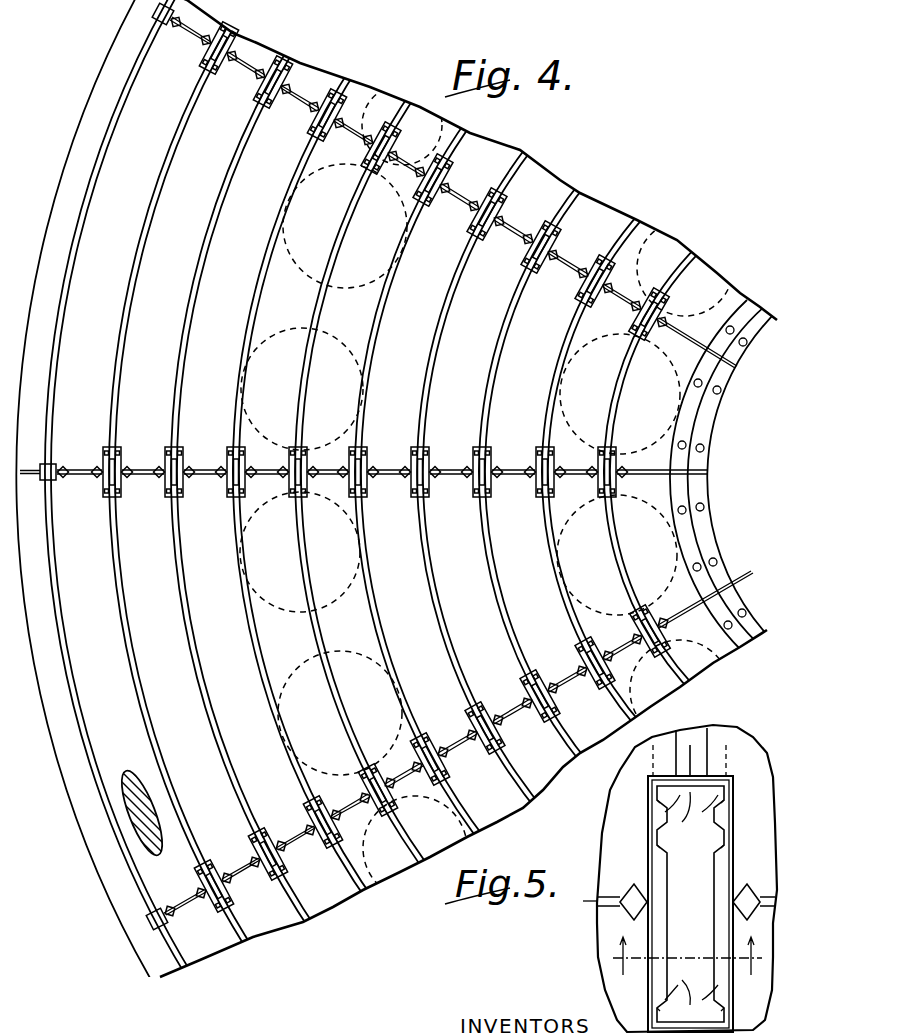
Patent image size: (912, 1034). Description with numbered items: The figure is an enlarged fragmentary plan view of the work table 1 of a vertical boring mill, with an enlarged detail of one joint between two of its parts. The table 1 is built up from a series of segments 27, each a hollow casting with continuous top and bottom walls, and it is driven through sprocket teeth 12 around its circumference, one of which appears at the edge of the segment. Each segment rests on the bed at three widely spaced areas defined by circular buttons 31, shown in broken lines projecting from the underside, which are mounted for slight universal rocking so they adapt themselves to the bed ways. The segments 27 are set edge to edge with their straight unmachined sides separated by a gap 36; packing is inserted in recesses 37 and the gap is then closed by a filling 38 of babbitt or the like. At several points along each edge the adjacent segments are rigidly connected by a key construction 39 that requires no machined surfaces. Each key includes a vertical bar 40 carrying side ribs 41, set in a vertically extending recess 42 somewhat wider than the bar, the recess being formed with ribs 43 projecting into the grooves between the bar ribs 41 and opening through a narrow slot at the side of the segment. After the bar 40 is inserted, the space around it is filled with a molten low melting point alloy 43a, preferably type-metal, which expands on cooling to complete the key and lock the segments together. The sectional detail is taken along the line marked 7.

In FIG. 4, the table 1 is at (552, 188).
In FIG. 5, the table 1 is at (752, 748).
In FIG. 4, the sprocket teeth 12 is at (130, 836).
In FIG. 4, the segments 27 is at (60, 216).
In FIG. 4, the circular buttons 31 is at (345, 286).
In FIG. 4, the gap 36 is at (152, 20).
In FIG. 5, the gap 36 is at (598, 911).
In FIG. 4, the recesses 37 is at (567, 269).
In FIG. 5, the recesses 37 is at (640, 888).
In FIG. 4, the filling 38 is at (501, 206).
In FIG. 5, the filling 38 is at (603, 871).
In FIG. 4, the key construction 39 is at (213, 88).
In FIG. 5, the key construction 39 is at (716, 840).
In FIG. 4, the vertical bars 40 is at (523, 262).
In FIG. 5, the vertical bars 40 is at (722, 842).
In FIG. 5, the side ribs 41 is at (699, 800).
In FIG. 5, the recesses 42 is at (652, 848).
In FIG. 5, the ribs 43 is at (656, 815).
In FIG. 5, the low melting point alloy 43a is at (690, 745).
In FIG. 5, the tool heads 7 is at (648, 992).